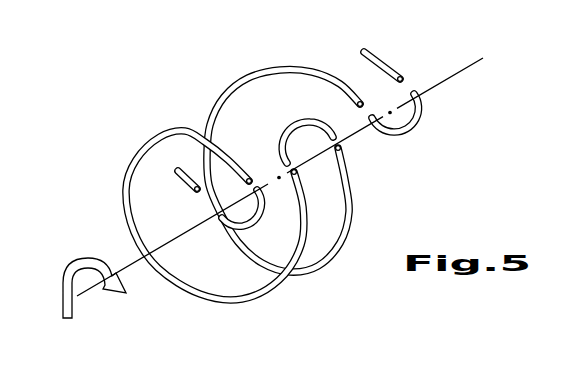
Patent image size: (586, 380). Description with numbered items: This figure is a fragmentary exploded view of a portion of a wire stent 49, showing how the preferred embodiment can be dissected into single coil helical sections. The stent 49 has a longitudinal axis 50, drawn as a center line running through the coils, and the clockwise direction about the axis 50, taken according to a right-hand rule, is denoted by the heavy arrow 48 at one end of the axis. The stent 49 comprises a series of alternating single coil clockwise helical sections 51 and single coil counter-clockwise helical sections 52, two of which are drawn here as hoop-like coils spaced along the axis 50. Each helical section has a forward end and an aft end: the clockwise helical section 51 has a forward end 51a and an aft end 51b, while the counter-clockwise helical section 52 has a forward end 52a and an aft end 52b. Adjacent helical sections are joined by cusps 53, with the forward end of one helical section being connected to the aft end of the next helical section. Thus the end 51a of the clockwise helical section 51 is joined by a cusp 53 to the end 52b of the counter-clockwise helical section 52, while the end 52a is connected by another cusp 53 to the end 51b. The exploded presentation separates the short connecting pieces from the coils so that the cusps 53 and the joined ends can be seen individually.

The heavy arrow 48 is at (65, 294).
The wire stent 49 is at (295, 156).
The longitudinal axis 50 is at (482, 57).
The single coil clockwise helical section 51 is at (287, 54).
The forward end of clockwise helical section 51a is at (360, 97).
The aft end of clockwise helical section 51b is at (345, 138).
The single coil counter-clockwise helical section 52 is at (160, 123).
The forward end of counter-clockwise helical section 52a is at (290, 167).
The aft end of counter-clockwise helical section 52b is at (246, 179).
The cusp 53 is at (290, 114).